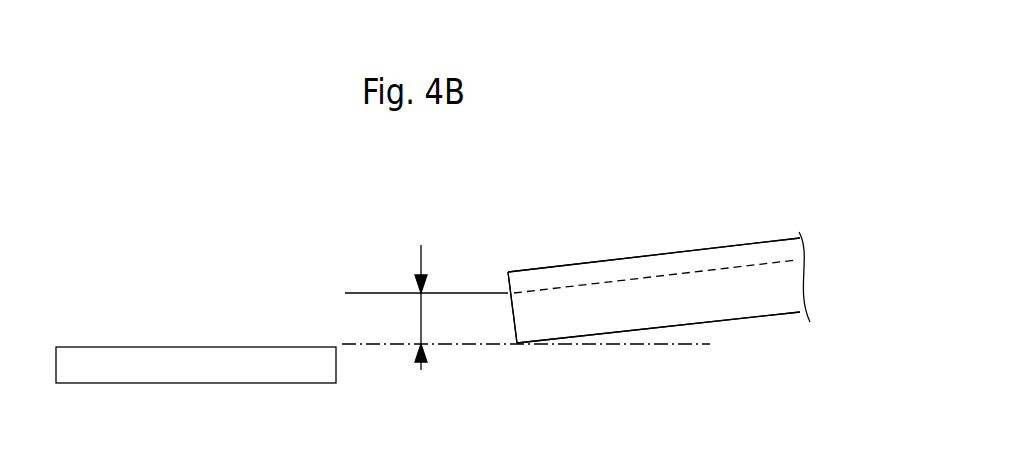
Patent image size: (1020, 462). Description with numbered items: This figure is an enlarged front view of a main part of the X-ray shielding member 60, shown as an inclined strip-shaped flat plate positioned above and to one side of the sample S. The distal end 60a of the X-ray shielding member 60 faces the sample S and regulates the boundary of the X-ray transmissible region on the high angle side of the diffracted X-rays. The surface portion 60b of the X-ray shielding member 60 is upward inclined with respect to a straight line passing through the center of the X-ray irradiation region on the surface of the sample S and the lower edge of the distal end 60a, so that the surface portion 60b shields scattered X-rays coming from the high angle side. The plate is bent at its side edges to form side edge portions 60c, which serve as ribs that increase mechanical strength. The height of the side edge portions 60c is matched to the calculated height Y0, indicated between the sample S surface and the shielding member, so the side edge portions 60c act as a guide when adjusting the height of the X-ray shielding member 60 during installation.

The sample S is at (240, 367).
The X-ray shielding member 60 is at (732, 232).
The distal end 60a is at (507, 278).
The surface portion 60b is at (645, 257).
The side edge portions 60c is at (649, 313).
The height Y0 is at (526, 307).